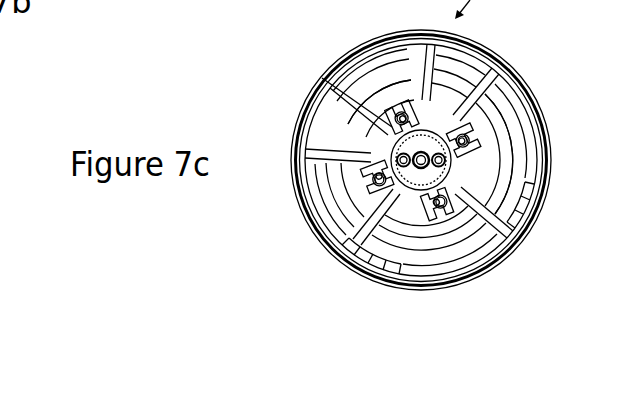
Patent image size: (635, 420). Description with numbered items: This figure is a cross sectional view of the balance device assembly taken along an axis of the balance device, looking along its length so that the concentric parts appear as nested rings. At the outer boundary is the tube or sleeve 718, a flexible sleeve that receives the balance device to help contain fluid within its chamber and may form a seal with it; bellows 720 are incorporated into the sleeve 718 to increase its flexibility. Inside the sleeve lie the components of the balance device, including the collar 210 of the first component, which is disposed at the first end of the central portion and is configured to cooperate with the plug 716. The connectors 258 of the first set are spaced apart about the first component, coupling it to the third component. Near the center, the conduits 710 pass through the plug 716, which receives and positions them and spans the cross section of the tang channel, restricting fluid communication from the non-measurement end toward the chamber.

The collar 210 is at (553, 128).
The first set of connectors 258 is at (370, 72).
The conduit 710 is at (372, 176).
The plug 716 is at (408, 135).
The sleeve 718 is at (505, 61).
The bellows 720 is at (499, 154).